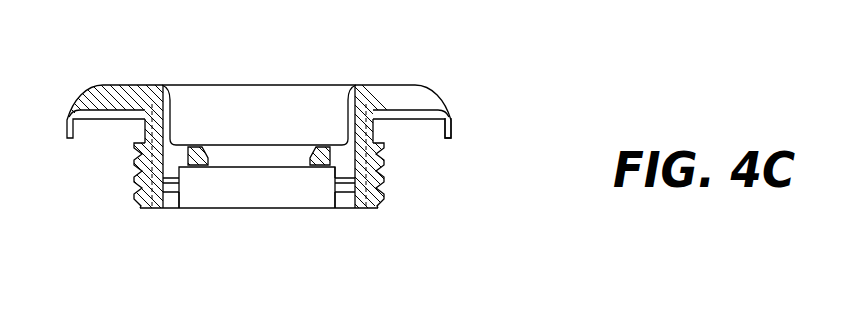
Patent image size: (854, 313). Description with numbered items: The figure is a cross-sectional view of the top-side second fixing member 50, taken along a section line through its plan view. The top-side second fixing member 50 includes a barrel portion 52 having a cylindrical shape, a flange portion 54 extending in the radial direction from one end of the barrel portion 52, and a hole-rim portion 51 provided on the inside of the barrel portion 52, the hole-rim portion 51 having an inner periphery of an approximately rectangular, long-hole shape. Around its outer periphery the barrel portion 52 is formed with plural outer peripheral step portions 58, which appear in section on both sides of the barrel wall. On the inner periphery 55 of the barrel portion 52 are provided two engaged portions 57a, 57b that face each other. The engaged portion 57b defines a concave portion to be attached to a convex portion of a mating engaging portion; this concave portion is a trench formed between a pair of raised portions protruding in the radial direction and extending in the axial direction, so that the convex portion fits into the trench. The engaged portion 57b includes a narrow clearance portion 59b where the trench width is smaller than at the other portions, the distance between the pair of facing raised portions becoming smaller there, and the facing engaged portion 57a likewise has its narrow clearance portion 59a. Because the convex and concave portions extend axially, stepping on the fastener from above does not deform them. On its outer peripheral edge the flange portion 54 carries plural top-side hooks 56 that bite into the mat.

The top-side second fixing member 50 is at (271, 243).
The hole-rim portion 51 is at (198, 146).
The barrel portion 52 is at (170, 124).
The flange portion 54 is at (393, 90).
The inner periphery 55 is at (350, 204).
The top-side hook 56 is at (452, 128).
The engaged portion 57a is at (343, 208).
The engaged portion 57b is at (170, 205).
The outer peripheral step portion 58 is at (384, 153).
The narrow clearance portion 59a is at (336, 181).
The narrow clearance portion 59b is at (183, 198).